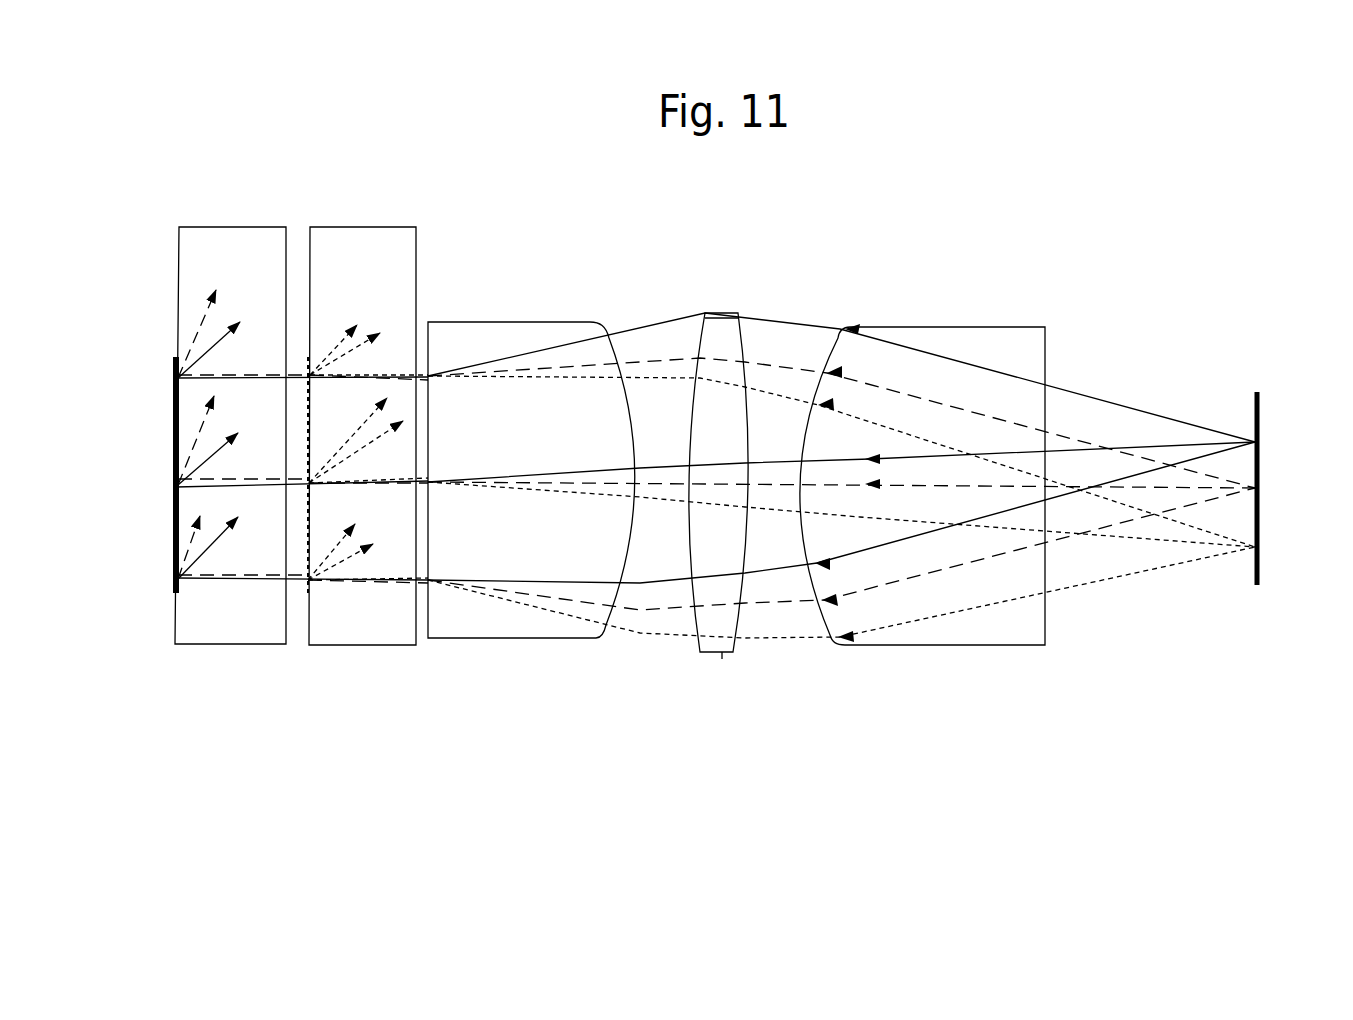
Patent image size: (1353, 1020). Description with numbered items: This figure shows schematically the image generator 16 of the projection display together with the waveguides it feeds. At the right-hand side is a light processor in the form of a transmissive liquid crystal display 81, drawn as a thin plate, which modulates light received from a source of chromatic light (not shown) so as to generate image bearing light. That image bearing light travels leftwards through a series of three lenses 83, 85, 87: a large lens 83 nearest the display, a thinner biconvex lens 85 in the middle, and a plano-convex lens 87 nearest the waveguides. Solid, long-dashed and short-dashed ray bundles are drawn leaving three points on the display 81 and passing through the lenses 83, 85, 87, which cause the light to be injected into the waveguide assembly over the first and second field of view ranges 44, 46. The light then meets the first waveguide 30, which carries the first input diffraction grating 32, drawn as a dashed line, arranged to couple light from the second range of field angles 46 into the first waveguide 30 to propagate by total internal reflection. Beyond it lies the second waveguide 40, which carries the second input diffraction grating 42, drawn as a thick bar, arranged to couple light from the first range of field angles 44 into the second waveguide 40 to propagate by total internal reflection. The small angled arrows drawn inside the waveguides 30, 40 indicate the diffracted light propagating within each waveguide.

The image generator 16 is at (736, 549).
The first waveguide 30 is at (368, 226).
The first input diffraction grating 32 is at (308, 583).
The second waveguide 40 is at (214, 226).
The second input diffraction grating 42 is at (176, 576).
The first range of field angles 44 is at (543, 352).
The second range of field angles 46 is at (493, 590).
The transmissive liquid crystal display 81 is at (1259, 583).
The lens 83 is at (980, 645).
The lens 85 is at (722, 659).
The lens 87 is at (542, 640).